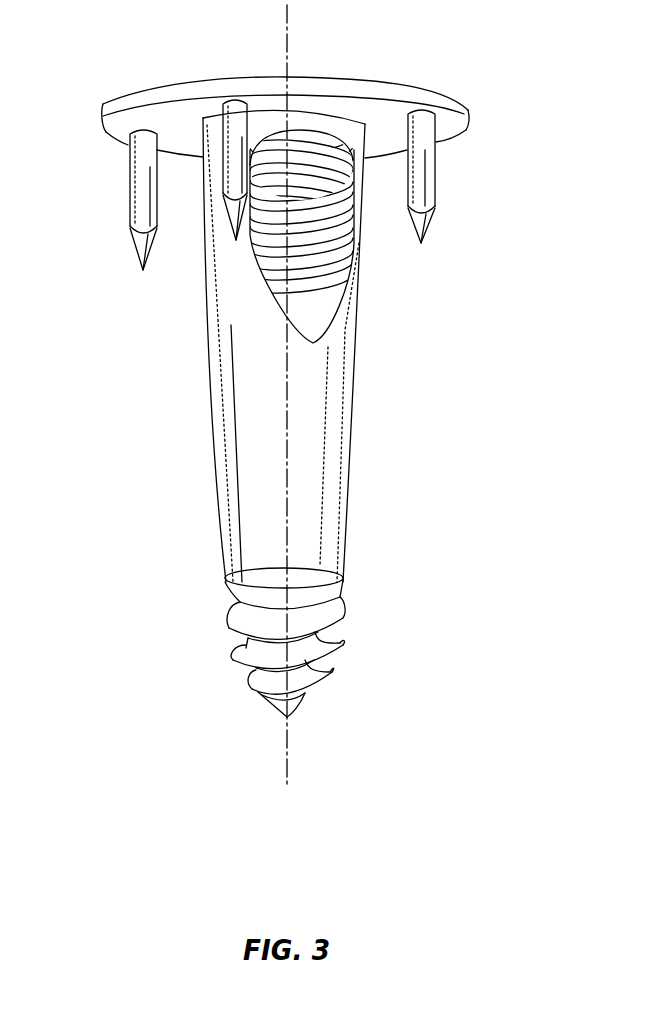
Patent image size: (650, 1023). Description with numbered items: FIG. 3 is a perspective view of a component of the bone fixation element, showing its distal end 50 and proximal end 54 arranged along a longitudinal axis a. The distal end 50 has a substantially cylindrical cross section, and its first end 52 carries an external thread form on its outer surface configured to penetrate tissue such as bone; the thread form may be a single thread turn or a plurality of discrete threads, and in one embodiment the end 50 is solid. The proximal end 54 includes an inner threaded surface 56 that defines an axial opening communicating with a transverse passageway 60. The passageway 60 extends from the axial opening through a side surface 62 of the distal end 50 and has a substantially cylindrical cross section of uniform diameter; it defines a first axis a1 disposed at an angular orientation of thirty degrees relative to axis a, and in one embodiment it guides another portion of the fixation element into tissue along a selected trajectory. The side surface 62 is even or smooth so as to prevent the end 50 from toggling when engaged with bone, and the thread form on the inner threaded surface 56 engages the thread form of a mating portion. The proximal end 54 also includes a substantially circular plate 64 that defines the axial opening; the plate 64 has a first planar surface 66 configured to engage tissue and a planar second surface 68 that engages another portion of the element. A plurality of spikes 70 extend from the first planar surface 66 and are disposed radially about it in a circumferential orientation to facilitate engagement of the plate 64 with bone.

The distal end 50 is at (112, 466).
The first end 52 is at (300, 680).
The proximal end 54 is at (455, 203).
The inner threaded surface 56 is at (333, 243).
The transverse passageway 60 is at (302, 202).
The side surface 62 is at (222, 373).
The plate 64 is at (449, 79).
The first planar surface 66 is at (445, 127).
The planar second surface 68 is at (158, 83).
The spike 70 is at (233, 183).